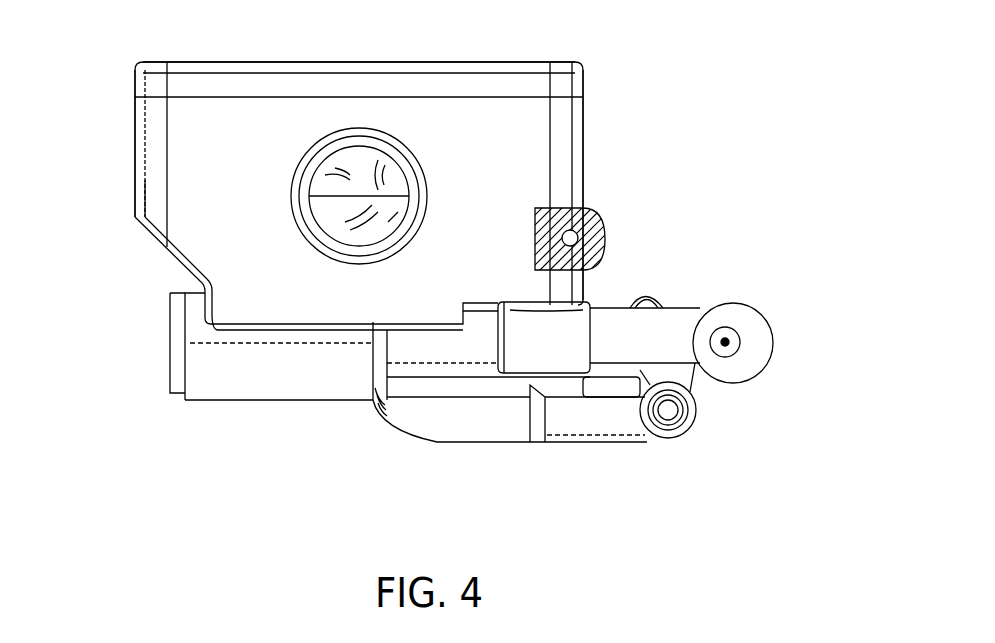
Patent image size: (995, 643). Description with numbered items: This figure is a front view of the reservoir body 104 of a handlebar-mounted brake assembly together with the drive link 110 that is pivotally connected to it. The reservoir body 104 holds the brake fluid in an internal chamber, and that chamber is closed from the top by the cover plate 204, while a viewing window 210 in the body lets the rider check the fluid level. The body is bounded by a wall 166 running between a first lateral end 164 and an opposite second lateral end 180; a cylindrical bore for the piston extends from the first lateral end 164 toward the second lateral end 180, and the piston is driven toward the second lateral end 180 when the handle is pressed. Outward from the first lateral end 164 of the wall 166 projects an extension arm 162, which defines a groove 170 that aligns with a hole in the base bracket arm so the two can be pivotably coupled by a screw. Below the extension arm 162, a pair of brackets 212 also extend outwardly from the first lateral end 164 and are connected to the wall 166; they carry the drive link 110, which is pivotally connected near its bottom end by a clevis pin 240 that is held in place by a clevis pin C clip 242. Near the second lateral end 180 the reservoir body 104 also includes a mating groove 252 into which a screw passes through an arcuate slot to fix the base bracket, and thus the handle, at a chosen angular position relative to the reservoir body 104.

The reservoir body 104 is at (585, 108).
The drive link 110 is at (657, 300).
The extension arm 162 is at (682, 323).
The first lateral end 164 is at (585, 153).
The wall 166 is at (187, 197).
The groove 170 is at (727, 343).
The second lateral end 180 is at (135, 123).
The cover plate 204 is at (427, 62).
The viewing window 210 is at (309, 196).
The brackets 212 is at (572, 427).
The clevis pin 240 is at (690, 418).
The clevis pin C clip 242 is at (643, 430).
The mating groove 252 is at (597, 213).